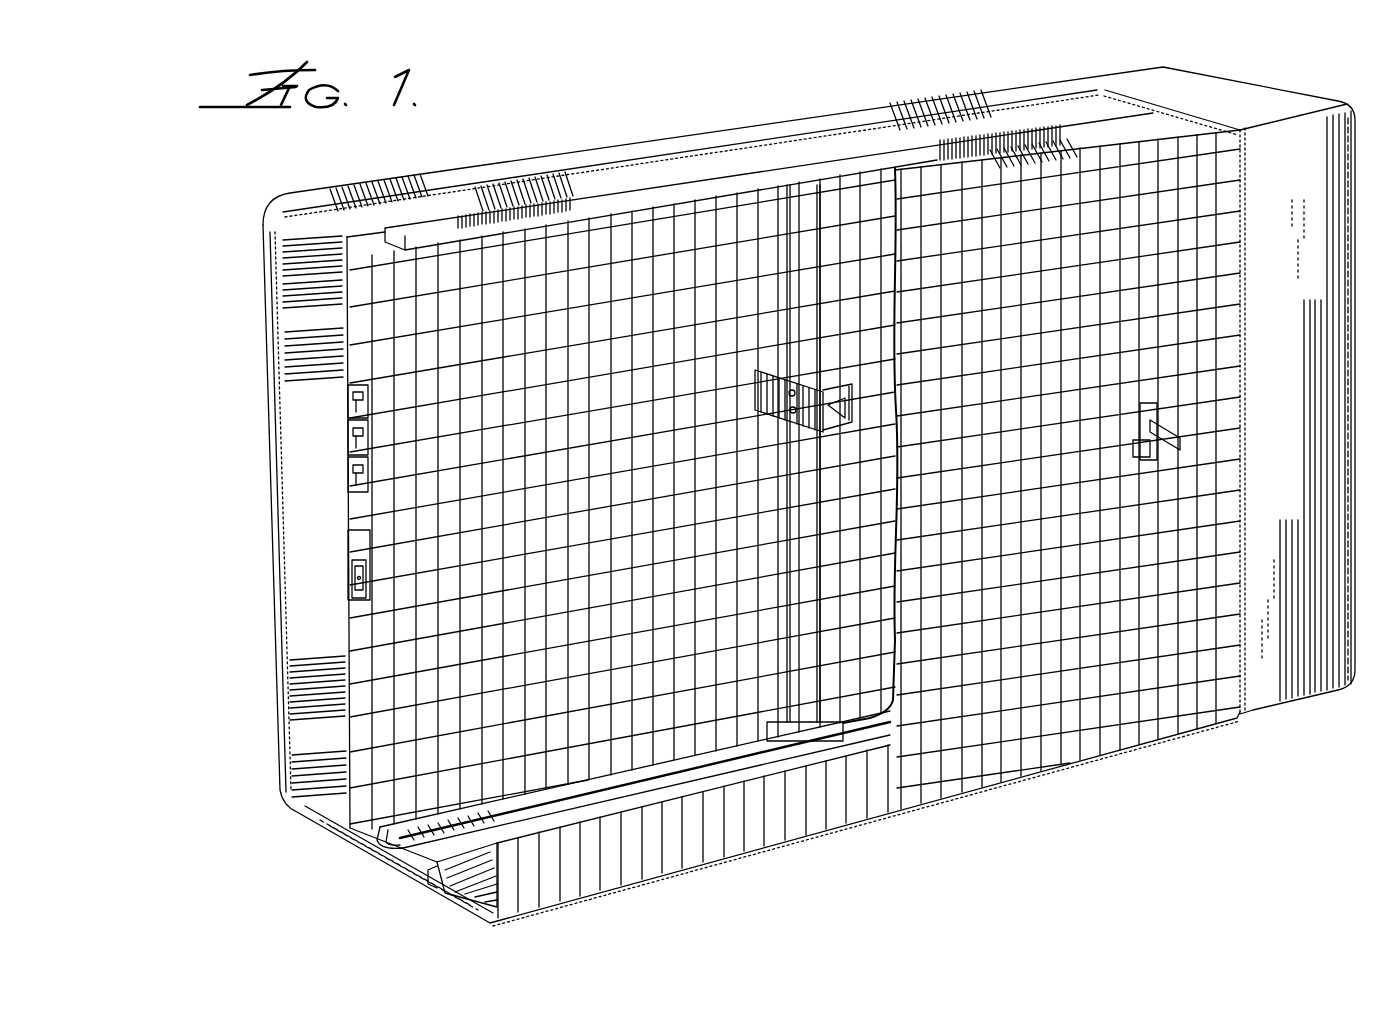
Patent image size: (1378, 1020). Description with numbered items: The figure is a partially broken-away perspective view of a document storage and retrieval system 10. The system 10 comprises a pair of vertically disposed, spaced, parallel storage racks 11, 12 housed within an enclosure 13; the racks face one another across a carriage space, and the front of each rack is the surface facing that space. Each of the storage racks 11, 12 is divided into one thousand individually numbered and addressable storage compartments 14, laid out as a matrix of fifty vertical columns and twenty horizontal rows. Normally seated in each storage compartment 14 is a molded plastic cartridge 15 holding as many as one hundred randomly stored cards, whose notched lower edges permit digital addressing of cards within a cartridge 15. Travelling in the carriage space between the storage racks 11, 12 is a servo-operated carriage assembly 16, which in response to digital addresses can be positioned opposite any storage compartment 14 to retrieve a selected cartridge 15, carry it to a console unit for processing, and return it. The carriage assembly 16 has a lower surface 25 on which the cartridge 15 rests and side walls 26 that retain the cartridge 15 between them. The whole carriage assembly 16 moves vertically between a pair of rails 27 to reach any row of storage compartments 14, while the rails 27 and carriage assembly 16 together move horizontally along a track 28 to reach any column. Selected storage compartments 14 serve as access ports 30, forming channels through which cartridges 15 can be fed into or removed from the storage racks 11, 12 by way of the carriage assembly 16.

The document storage and retrieval system 10 is at (192, 231).
The storage rack 11 is at (298, 690).
The storage rack 12 is at (455, 879).
The enclosure 13 is at (345, 195).
The storage compartments 14 is at (377, 350).
The cartridge 15 is at (352, 470).
The carriage assembly 16 is at (752, 404).
The lower surface 25 is at (833, 414).
The side walls 26 is at (850, 388).
The rails 27 is at (803, 326).
The track 28 is at (375, 849).
The access ports 30 is at (356, 562).